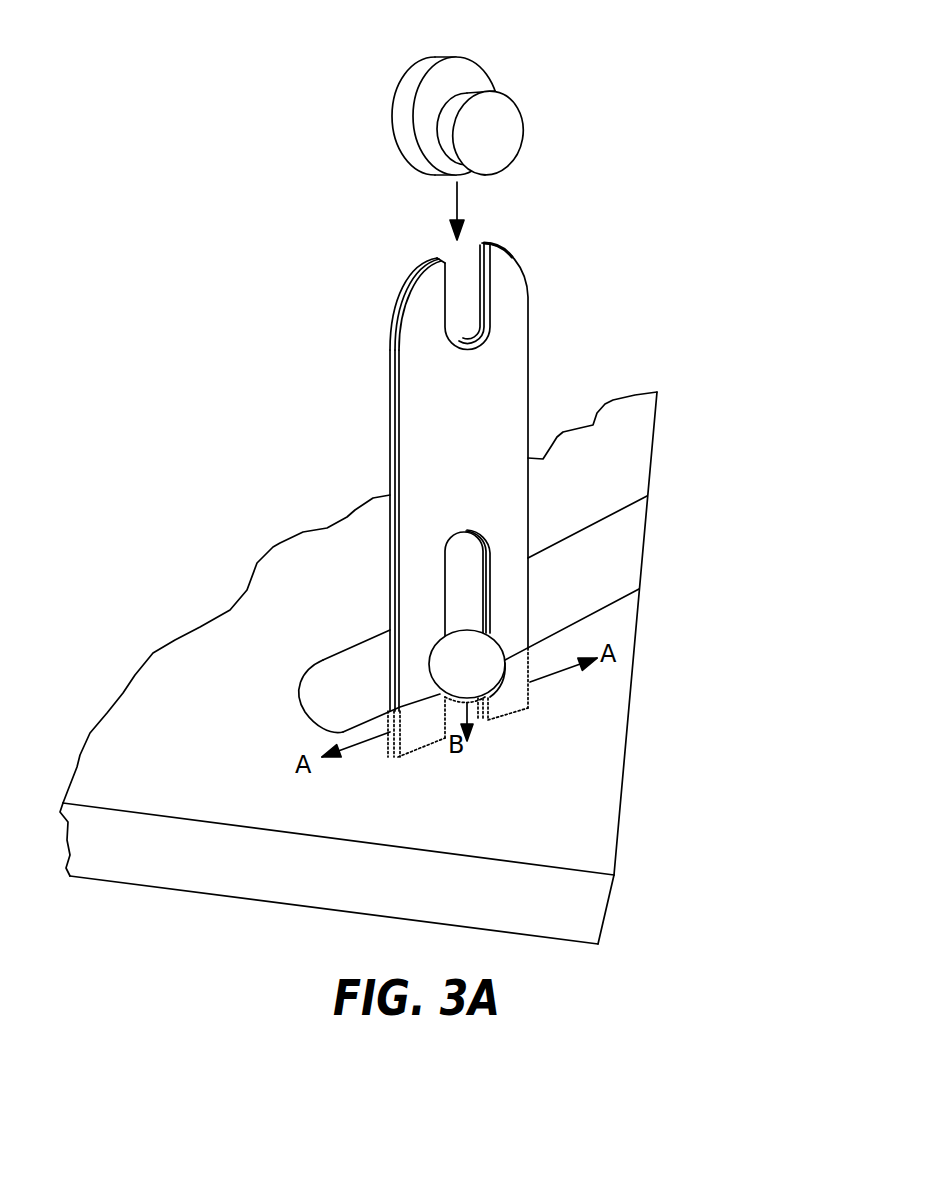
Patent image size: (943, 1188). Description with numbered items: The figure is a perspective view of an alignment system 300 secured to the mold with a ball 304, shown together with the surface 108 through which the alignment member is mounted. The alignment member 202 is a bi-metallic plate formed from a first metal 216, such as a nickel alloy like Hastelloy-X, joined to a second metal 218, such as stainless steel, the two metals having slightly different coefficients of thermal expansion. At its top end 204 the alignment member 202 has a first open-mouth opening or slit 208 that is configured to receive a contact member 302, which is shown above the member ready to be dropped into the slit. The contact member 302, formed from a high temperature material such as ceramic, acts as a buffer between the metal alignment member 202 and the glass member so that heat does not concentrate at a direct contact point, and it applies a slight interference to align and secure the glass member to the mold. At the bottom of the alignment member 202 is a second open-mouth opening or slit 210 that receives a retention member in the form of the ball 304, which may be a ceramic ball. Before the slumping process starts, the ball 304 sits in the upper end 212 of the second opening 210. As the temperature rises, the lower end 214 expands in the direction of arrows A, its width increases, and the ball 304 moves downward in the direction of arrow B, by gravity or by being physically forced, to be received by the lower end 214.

The panel 108 is at (363, 693).
The alignment member 202 is at (450, 514).
The top end 204 is at (512, 300).
The first opening 208 is at (463, 274).
The second opening 210 is at (473, 627).
The upper end 212 is at (467, 573).
The lower end 214 is at (477, 723).
The first metal 216 is at (400, 300).
The second metal 218 is at (397, 347).
The alignment system 300 is at (535, 198).
The contact member 302 is at (477, 77).
The ball 304 is at (488, 680).